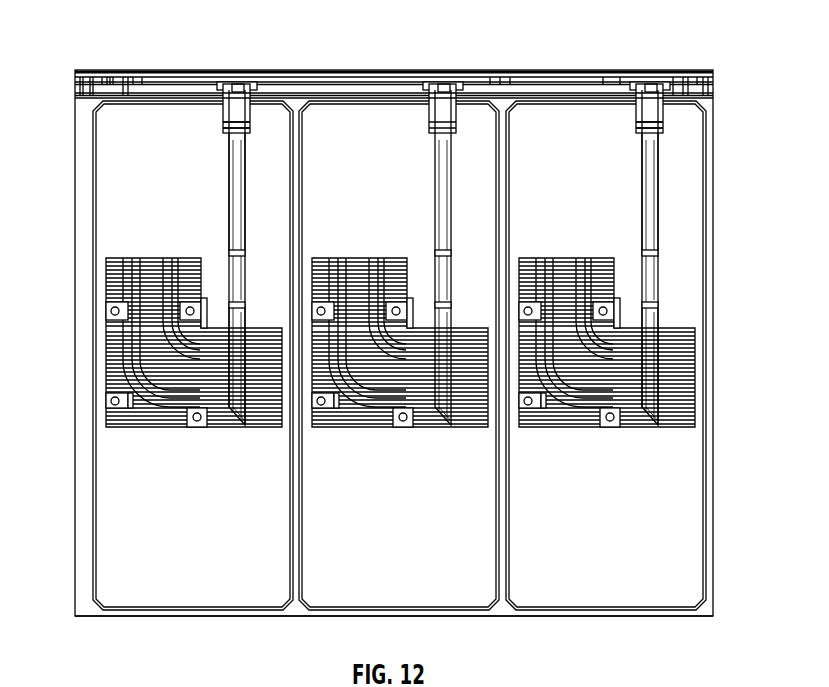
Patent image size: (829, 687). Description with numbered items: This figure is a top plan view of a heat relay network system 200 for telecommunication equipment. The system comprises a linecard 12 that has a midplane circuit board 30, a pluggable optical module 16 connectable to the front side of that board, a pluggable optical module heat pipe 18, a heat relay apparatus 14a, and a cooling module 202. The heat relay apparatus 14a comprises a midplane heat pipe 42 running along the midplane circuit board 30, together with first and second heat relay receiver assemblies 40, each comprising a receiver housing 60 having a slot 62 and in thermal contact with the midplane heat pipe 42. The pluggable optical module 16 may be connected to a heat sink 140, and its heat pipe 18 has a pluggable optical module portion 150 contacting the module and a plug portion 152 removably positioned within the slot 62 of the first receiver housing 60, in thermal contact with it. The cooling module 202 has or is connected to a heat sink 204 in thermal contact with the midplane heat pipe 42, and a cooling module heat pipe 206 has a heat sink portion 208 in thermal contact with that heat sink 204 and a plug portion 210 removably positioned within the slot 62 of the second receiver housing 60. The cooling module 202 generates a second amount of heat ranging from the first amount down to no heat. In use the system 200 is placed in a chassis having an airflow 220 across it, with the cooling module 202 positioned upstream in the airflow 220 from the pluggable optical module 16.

The linecard 12 is at (203, 622).
The heat relay apparatus 14a is at (598, 87).
The pluggable optical module 16 is at (92, 178).
The pluggable optical module heat pipe 18 is at (232, 200).
The midplane circuit board 30 is at (75, 72).
The heat relay receiver assembly 40 is at (224, 116).
The midplane heat pipe 42 is at (370, 92).
The receiver housing 60 is at (251, 130).
The slot 62 is at (250, 128).
The heat sink 140 is at (106, 348).
The pluggable optical module portion 150 is at (245, 322).
The plug portion 152 is at (238, 147).
The heat relay network system 200 is at (690, 56).
The cooling module 202 is at (655, 612).
The heat sink 204 is at (695, 415).
The cooling module heat pipe 206 is at (645, 198).
The heat sink portion 208 is at (660, 318).
The plug portion 210 is at (645, 148).
The airflow 220 is at (728, 333).